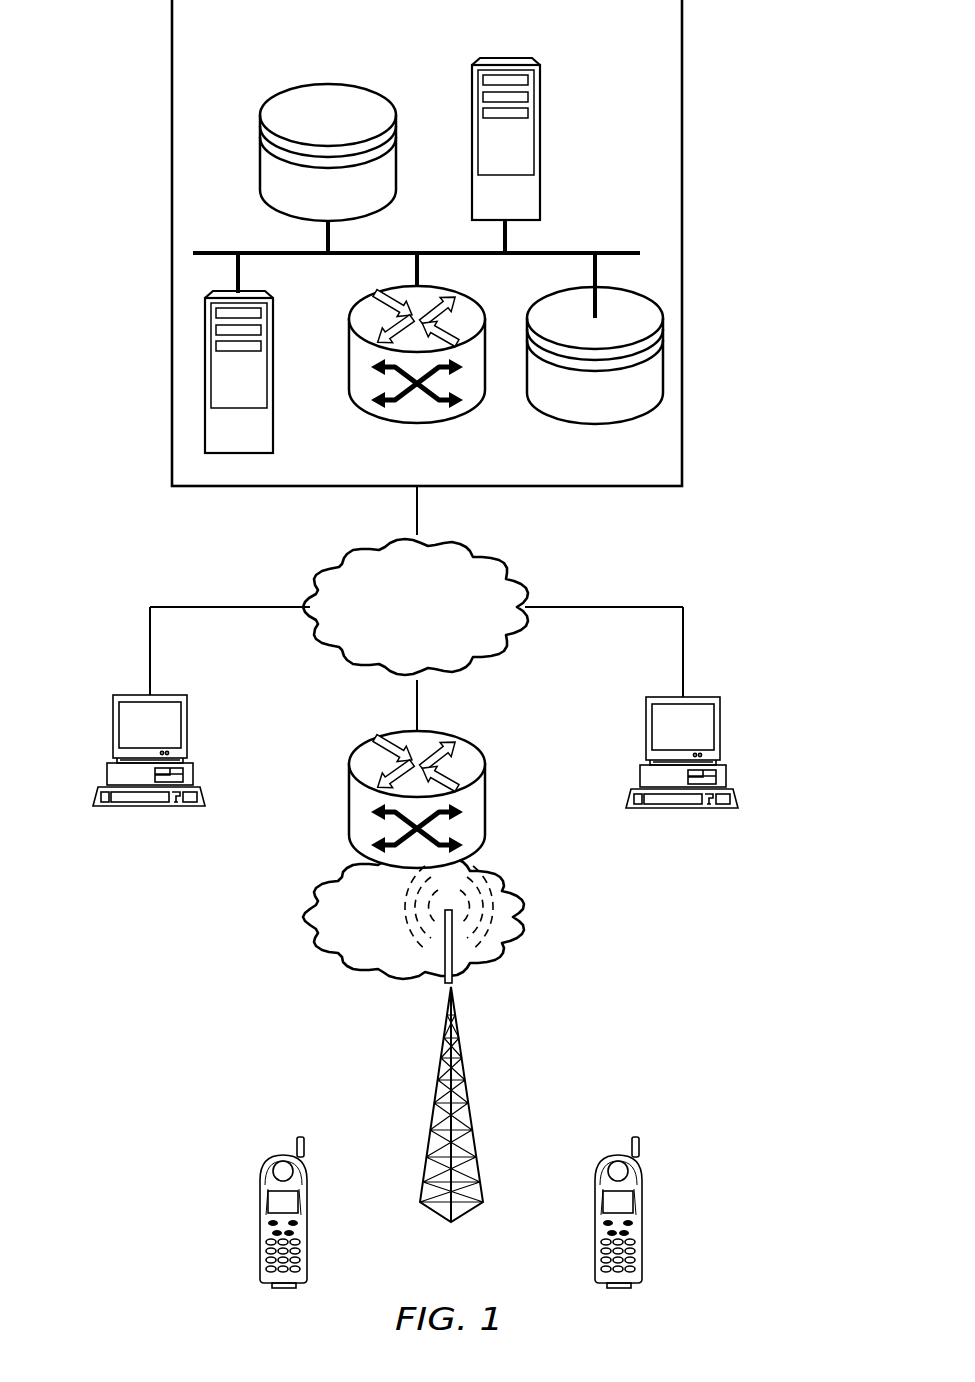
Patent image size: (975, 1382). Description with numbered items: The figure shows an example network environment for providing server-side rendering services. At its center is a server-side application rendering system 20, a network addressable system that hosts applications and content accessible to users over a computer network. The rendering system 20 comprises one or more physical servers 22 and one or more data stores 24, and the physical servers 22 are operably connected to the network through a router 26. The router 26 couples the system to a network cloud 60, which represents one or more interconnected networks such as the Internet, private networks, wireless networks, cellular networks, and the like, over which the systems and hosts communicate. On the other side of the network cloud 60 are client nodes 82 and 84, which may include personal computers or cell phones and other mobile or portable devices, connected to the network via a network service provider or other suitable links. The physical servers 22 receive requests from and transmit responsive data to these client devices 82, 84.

The server-side application rendering system 20 is at (632, 89).
The physical server 22 is at (541, 140).
The data store 24 is at (260, 165).
The router 26 is at (349, 364).
The network cloud 60 is at (325, 694).
The client node 82 is at (113, 728).
The client node 84 is at (260, 1235).